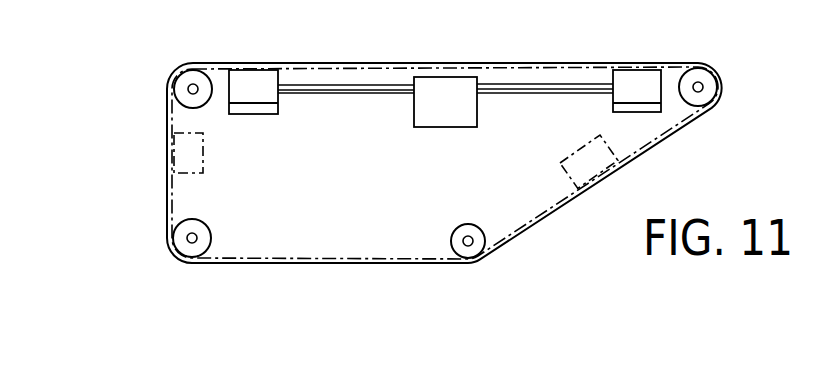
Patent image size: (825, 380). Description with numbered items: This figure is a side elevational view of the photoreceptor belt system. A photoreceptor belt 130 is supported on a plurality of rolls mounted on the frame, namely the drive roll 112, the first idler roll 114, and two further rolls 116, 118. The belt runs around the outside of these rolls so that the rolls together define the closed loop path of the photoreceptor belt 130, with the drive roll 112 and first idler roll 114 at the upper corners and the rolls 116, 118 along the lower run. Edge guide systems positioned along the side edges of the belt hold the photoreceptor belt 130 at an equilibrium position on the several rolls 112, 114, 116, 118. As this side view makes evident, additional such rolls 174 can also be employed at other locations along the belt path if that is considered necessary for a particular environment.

The photoreceptor belt 130 is at (408, 63).
The first idler roll 114 is at (186, 84).
The drive roll 112 is at (707, 83).
The roll 116 is at (181, 238).
The roll 118 is at (482, 244).
The additional roll 174 is at (185, 153).